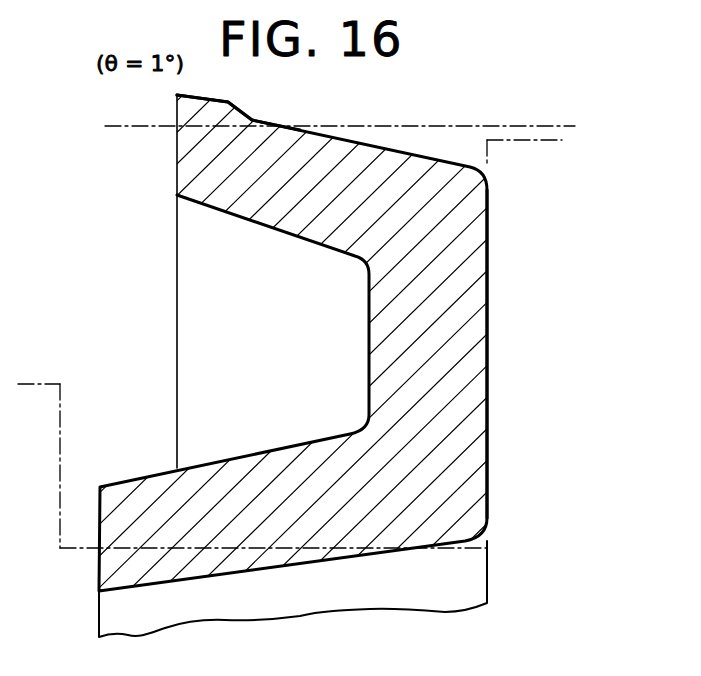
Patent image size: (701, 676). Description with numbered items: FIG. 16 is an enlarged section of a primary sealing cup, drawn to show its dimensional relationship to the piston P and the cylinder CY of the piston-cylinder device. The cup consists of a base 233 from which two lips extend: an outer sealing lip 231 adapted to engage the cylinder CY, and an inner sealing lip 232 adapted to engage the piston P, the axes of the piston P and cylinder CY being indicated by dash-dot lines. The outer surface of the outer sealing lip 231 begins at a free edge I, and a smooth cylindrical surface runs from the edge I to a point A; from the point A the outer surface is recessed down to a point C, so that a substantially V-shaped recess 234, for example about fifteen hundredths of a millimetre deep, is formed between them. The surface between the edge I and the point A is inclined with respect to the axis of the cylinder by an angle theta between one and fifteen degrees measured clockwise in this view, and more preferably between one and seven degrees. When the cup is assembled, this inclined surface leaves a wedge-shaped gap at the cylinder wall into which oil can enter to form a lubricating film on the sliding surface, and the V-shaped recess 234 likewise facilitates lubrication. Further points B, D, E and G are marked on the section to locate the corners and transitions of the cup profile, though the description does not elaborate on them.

The outer sealing lip 231 is at (347, 172).
The inner sealing lip 232 is at (320, 538).
The base 233 is at (475, 352).
The V-shaped recess 234 is at (262, 120).
The free edge I is at (177, 95).
The point A is at (228, 102).
The point C is at (253, 120).
The cylinder CY is at (460, 128).
The point B (F) B is at (489, 166).
The point D is at (176, 196).
The point E is at (360, 262).
The point G is at (488, 547).
The piston P is at (60, 419).